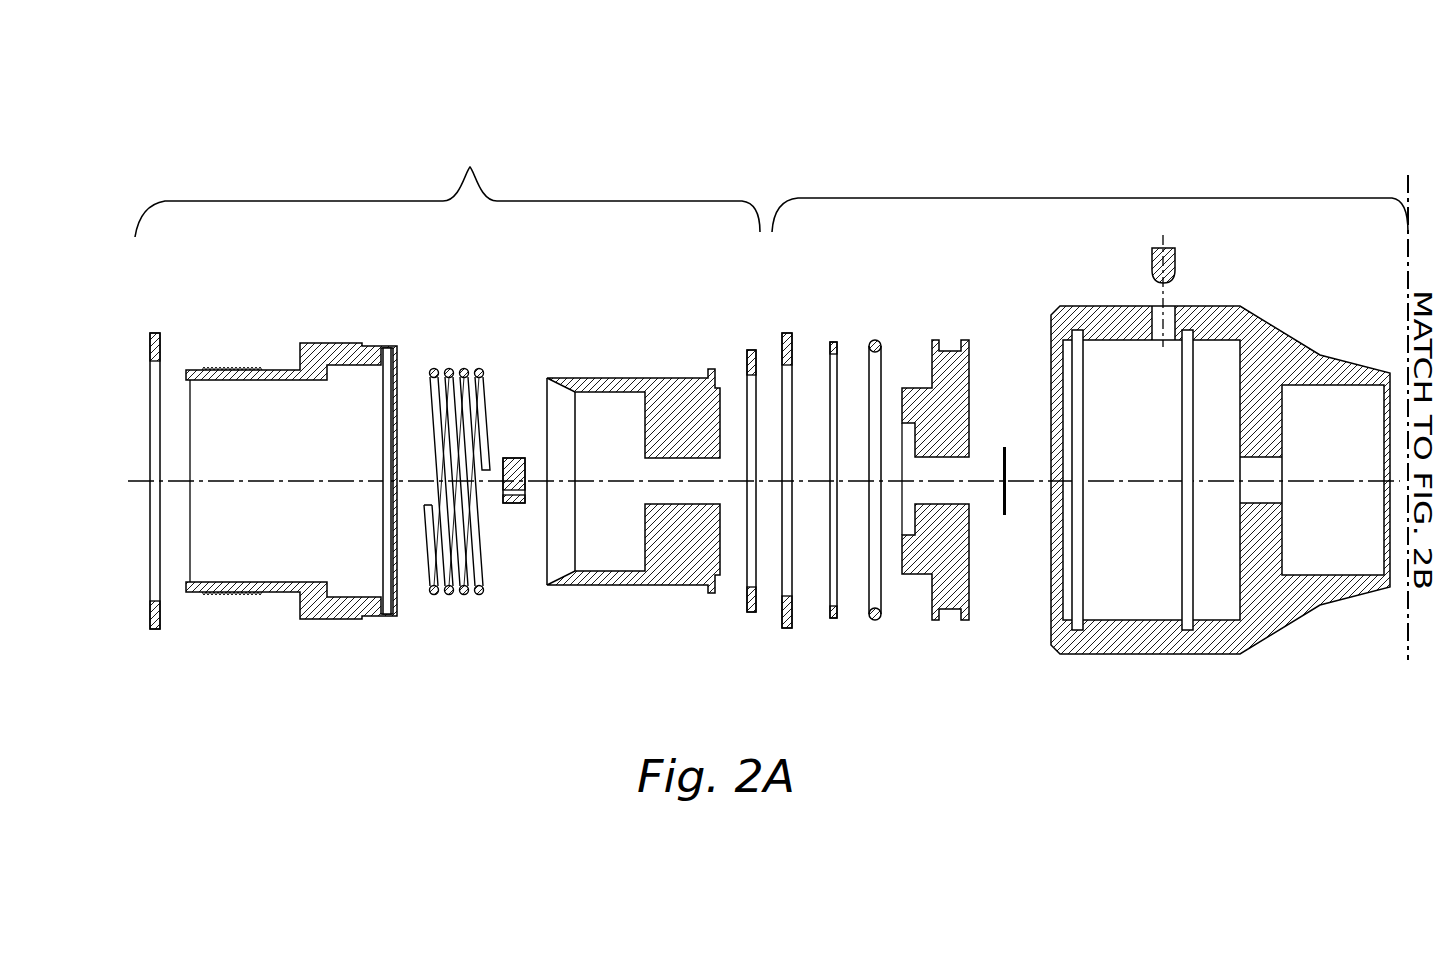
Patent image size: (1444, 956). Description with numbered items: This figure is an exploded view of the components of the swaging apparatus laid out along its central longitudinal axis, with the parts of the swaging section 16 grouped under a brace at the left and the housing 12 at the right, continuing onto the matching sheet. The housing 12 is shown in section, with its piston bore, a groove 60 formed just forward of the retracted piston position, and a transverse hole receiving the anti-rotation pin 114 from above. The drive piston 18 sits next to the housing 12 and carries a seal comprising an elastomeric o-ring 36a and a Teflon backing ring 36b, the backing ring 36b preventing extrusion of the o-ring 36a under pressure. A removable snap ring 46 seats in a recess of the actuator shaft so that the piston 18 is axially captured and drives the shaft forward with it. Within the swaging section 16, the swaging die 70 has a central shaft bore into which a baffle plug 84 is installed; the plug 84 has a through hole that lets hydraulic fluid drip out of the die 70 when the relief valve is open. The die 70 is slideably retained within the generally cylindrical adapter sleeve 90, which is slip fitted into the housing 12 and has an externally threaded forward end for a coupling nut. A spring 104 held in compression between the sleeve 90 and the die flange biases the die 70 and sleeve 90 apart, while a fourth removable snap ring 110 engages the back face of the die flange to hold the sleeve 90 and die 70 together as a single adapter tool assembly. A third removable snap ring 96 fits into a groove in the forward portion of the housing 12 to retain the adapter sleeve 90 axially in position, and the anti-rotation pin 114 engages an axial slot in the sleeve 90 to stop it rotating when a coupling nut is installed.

The housing 12 is at (1178, 660).
The swaging section 16 is at (447, 364).
The drive piston 18 is at (923, 582).
The elastomeric o-ring 36a is at (882, 370).
The Teflon backing ring 36b is at (837, 356).
The removable snap ring 46 is at (1007, 497).
The groove 60 is at (792, 342).
The swaging die 70 is at (630, 592).
The baffle plug 84 is at (516, 504).
The adapter sleeve 90 is at (324, 336).
The third removable snap ring 96 is at (160, 350).
The spring 104 is at (464, 369).
The fourth removable snap ring 110 is at (748, 352).
The anti-rotation pin 114 is at (1170, 265).